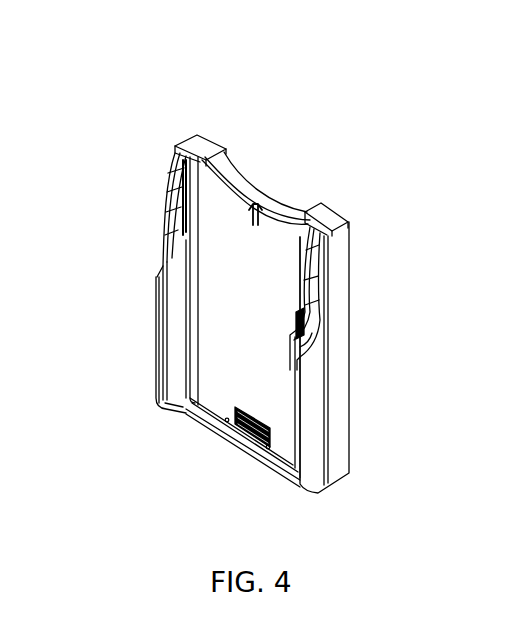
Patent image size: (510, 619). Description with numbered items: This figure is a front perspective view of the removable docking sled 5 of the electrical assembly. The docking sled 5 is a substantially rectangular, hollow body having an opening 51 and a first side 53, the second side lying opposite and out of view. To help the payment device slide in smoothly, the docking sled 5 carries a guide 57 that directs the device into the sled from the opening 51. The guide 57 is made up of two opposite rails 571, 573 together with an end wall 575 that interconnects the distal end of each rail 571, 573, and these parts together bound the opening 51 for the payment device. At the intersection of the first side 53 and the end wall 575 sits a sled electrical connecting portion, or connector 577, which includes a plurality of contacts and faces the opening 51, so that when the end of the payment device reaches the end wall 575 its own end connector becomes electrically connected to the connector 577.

The docking sled 5 is at (112, 115).
The opening 51 is at (220, 212).
The first side 53 is at (223, 333).
The guide 57 is at (313, 448).
The rail 571 is at (167, 296).
The rail 573 is at (313, 362).
The end wall 575 is at (262, 452).
The connector 577 is at (240, 423).